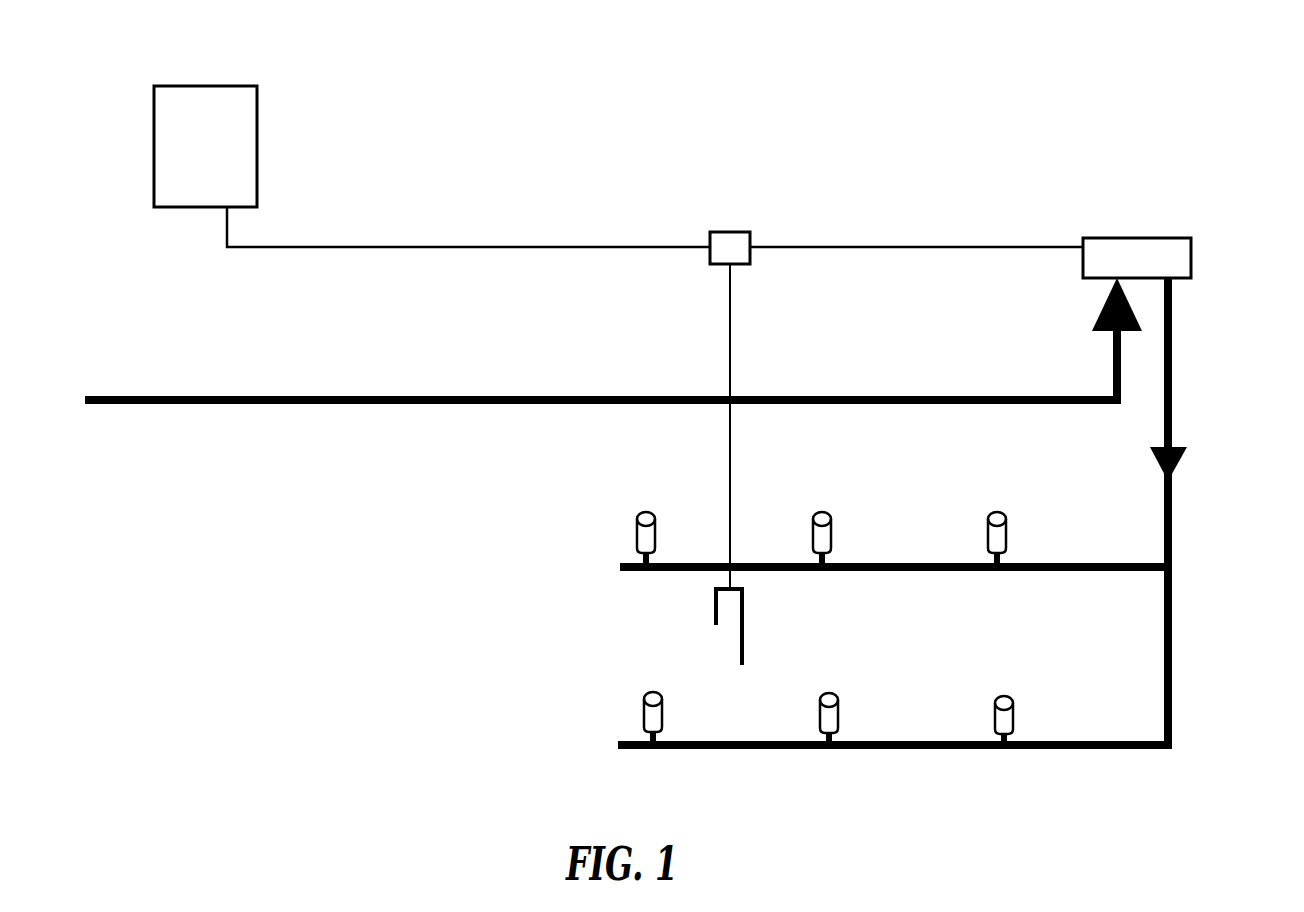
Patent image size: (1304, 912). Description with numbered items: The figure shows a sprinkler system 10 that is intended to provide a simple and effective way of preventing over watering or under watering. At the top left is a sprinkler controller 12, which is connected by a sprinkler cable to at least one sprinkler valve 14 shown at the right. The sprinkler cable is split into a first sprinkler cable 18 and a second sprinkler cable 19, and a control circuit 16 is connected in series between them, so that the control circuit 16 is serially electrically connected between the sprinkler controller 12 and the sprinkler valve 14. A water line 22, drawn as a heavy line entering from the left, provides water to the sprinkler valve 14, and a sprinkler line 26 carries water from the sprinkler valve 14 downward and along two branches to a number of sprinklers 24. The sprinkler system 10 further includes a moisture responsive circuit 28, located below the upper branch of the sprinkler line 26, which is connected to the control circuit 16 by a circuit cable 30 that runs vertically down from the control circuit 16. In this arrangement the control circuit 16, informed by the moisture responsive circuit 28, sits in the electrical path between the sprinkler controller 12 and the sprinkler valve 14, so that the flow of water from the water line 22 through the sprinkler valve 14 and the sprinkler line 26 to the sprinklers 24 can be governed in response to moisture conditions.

The sprinkler system 10 is at (875, 134).
The sprinkler controller 12 is at (237, 153).
The sprinkler valve 14 is at (1132, 245).
The control circuit 16 is at (725, 248).
The first sprinkler cable 18 is at (425, 247).
The second sprinkler cable 19 is at (912, 244).
The water line 22 is at (382, 396).
The sprinklers 24 is at (646, 538).
The sprinkler line 26 is at (1172, 428).
The moisture responsive circuit 28 is at (688, 628).
The circuit cable 30 is at (725, 340).